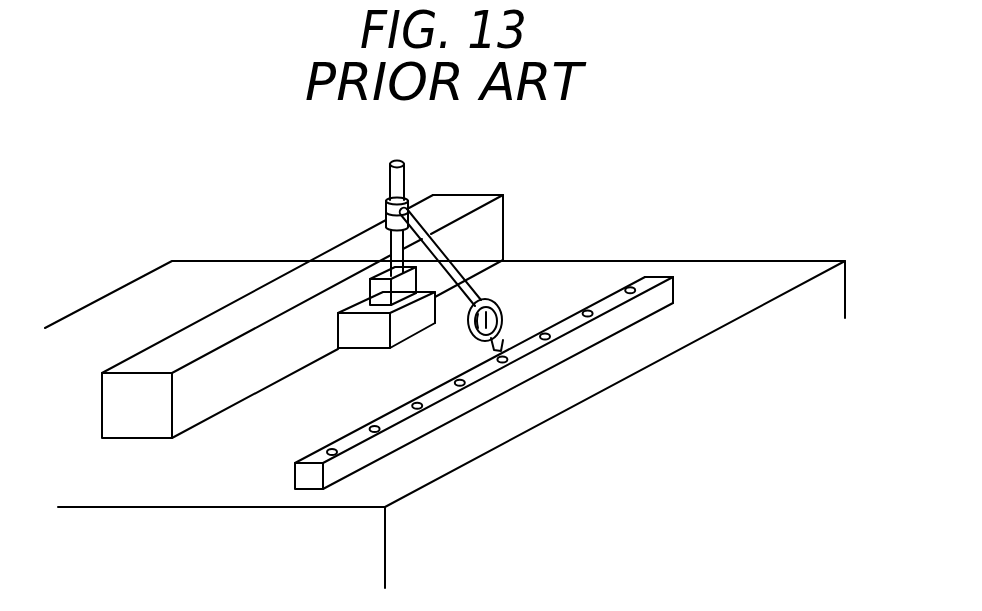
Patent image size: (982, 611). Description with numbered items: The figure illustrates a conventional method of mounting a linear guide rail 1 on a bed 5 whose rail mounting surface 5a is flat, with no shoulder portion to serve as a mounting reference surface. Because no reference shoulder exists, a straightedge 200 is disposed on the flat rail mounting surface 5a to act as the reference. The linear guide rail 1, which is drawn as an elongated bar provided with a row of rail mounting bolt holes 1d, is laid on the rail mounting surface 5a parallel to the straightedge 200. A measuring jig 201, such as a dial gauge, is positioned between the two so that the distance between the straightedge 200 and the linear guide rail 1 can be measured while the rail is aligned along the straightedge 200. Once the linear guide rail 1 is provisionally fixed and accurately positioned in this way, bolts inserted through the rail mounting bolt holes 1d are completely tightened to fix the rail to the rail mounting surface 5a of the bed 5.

The linear guide rail 1 is at (484, 418).
The rail mounting bolt holes 1d is at (457, 388).
The bed 5 is at (446, 391).
The rail mounting surface 5a is at (738, 278).
The straightedge 200 is at (137, 425).
The measuring jig 201 is at (503, 310).